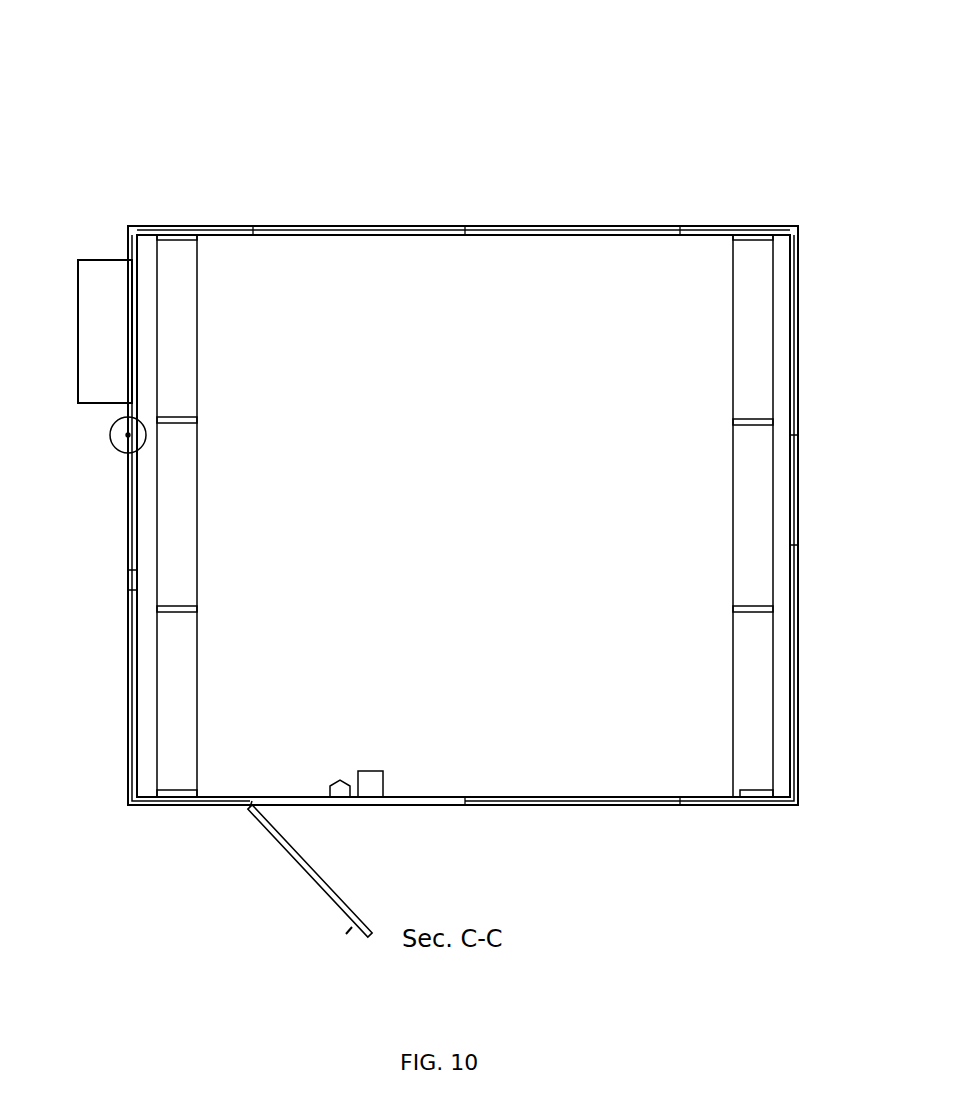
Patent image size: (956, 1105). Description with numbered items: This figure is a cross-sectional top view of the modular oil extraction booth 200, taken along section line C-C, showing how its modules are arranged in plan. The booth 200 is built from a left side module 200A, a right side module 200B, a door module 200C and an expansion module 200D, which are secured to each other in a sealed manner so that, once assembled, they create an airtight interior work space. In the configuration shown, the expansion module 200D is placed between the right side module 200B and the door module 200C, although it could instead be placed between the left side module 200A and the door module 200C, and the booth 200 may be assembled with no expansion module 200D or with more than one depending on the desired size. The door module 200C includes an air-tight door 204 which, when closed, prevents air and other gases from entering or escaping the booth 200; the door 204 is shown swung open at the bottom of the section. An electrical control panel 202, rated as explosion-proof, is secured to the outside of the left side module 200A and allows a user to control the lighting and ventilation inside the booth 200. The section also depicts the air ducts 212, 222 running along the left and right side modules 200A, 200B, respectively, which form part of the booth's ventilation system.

The oil extraction booth 200 is at (455, 104).
The electrical control panel 202 is at (98, 262).
The air-tight door 204 is at (292, 856).
The air duct 212 is at (175, 262).
The air duct 222 is at (756, 260).
The left side module 200A is at (177, 798).
The right side module 200B is at (725, 806).
The door module 200C is at (308, 234).
The expansion module 200D is at (563, 232).